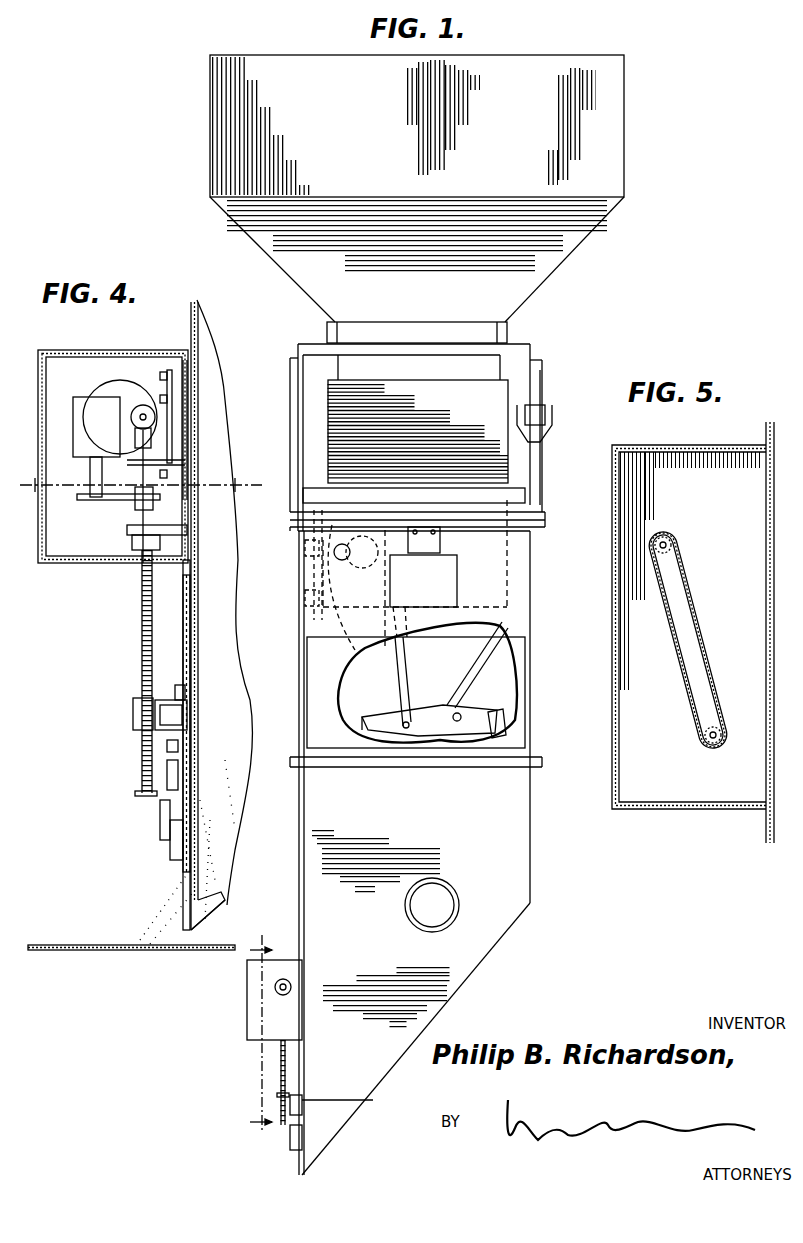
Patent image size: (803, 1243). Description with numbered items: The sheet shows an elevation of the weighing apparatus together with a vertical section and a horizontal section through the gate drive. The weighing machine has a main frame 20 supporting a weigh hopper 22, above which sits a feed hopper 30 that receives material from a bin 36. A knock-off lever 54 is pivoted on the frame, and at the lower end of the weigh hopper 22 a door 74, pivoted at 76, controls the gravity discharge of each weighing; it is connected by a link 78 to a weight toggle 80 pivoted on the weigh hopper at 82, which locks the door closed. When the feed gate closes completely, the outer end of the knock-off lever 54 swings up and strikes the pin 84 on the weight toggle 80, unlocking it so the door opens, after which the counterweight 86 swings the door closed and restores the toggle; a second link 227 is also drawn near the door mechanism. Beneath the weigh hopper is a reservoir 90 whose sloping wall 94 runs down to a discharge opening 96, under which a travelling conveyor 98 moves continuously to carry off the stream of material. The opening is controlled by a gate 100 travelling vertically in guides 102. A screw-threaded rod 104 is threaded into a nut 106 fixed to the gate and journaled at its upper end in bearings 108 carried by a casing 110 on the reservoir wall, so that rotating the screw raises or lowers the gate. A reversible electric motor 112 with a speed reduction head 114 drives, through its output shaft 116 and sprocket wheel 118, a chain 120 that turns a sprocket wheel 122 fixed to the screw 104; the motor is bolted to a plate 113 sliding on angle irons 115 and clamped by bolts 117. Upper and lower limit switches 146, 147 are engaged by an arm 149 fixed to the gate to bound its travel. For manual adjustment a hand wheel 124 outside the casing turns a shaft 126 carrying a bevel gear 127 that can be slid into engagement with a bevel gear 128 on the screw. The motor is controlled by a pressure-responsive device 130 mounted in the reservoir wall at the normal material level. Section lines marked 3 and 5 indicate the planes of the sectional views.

In FIG. 1, the bin 36 is at (562, 272).
In FIG. 1, the feed hopper 30 is at (485, 372).
In FIG. 1, the weigh hopper 22 is at (418, 431).
In FIG. 1, the knock-off lever 54 is at (332, 512).
In FIG. 1, the pin 84 is at (341, 578).
In FIG. 1, the weight toggle pivot 82 is at (416, 529).
In FIG. 1, the main frame 20 is at (535, 514).
In FIG. 1, the weight toggle 80 is at (344, 562).
In FIG. 1, the link 78 is at (400, 662).
In FIG. 1, the link 227 is at (468, 656).
In FIG. 1, the door 74 is at (377, 732).
In FIG. 1, the door pivot 76 is at (458, 722).
In FIG. 1, the counterweight 86 is at (498, 722).
In FIG. 1, the reservoir 90 is at (414, 853).
In FIG. 4, the reservoir 90 is at (199, 640).
In FIG. 5, the reservoir 90 is at (770, 632).
In FIG. 1, the pressure-responsive device 130 is at (437, 897).
In FIG. 1, the sloping wall 94 is at (452, 1007).
In FIG. 1, the casing 110 is at (248, 990).
In FIG. 4, the casing 110 is at (45, 565).
In FIG. 5, the casing 110 is at (612, 628).
In FIG. 1, the hand wheel 124 is at (275, 990).
In FIG. 1, the screw-threaded rod 104 is at (281, 1063).
In FIG. 4, the screw-threaded rod 104 is at (142, 672).
In FIG. 5, the screw-threaded rod 104 is at (711, 740).
In FIG. 1, the section line 3 is at (260, 1038).
In FIG. 4, the angle irons 115 is at (172, 360).
In FIG. 4, the bolts 117 is at (160, 376).
In FIG. 4, the reversible electric motor 112 is at (108, 398).
In FIG. 4, the speed reduction head 114 is at (73, 415).
In FIG. 4, the plate 113 is at (165, 400).
In FIG. 4, the bevel gear 127 is at (147, 417).
In FIG. 4, the shaft 126 is at (131, 417).
In FIG. 4, the bevel gear 128 is at (119, 442).
In FIG. 4, the output shaft 116 is at (88, 470).
In FIG. 5, the output shaft 116 is at (664, 541).
In FIG. 4, the sprocket wheel 118 is at (80, 502).
In FIG. 5, the sprocket wheel 118 is at (667, 545).
In FIG. 4, the chain 120 is at (135, 500).
In FIG. 5, the chain 120 is at (690, 598).
In FIG. 4, the bearings 108 is at (135, 535).
In FIG. 4, the section line 5 is at (135, 487).
In FIG. 4, the guides 102 is at (183, 628).
In FIG. 4, the nut 106 is at (133, 714).
In FIG. 4, the upper limit switch 146 is at (167, 746).
In FIG. 4, the arm 149 is at (167, 768).
In FIG. 4, the gate 100 is at (190, 780).
In FIG. 4, the lower limit switch 147 is at (160, 824).
In FIG. 4, the travelling conveyor 98 is at (120, 945).
In FIG. 4, the discharge opening 96 is at (205, 928).
In FIG. 5, the sprocket wheel 122 is at (706, 732).